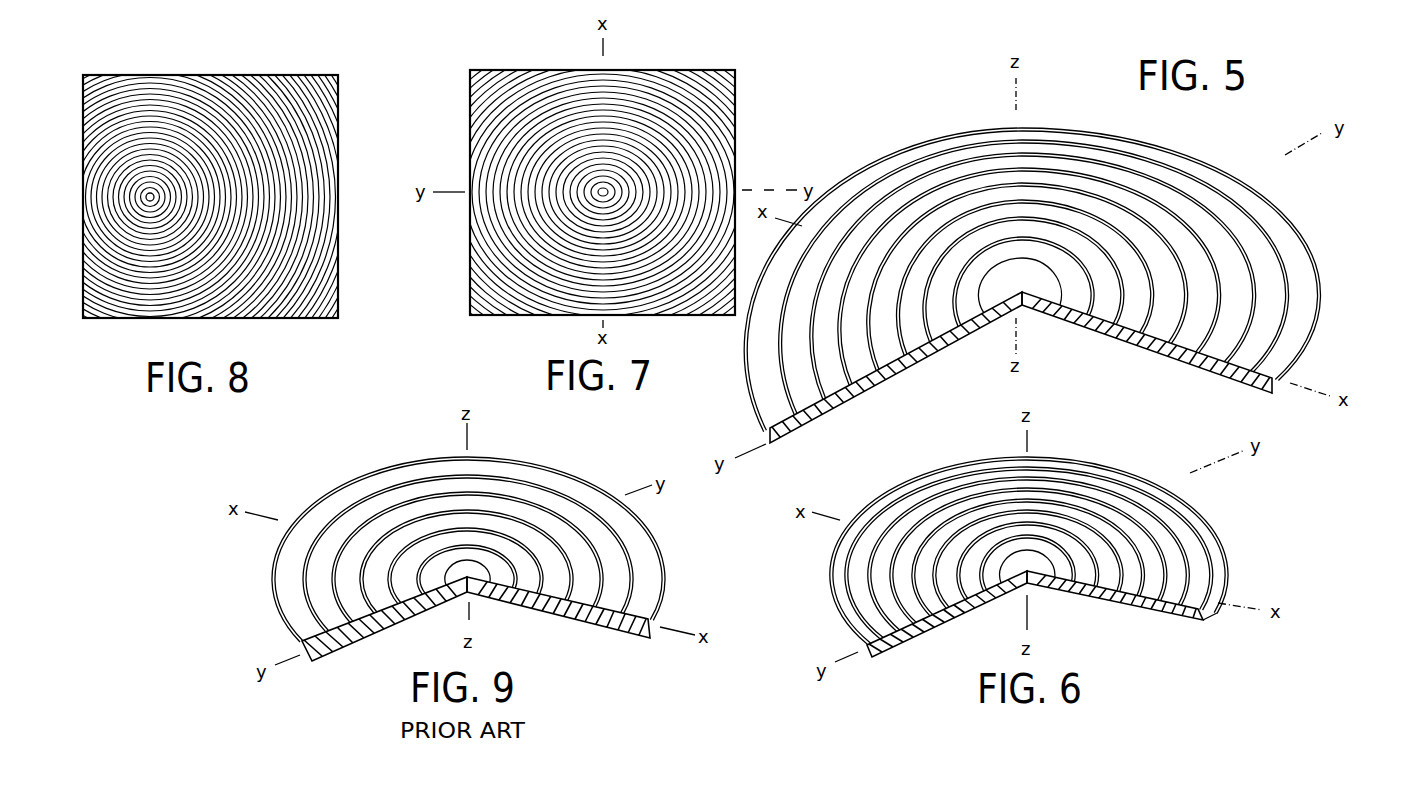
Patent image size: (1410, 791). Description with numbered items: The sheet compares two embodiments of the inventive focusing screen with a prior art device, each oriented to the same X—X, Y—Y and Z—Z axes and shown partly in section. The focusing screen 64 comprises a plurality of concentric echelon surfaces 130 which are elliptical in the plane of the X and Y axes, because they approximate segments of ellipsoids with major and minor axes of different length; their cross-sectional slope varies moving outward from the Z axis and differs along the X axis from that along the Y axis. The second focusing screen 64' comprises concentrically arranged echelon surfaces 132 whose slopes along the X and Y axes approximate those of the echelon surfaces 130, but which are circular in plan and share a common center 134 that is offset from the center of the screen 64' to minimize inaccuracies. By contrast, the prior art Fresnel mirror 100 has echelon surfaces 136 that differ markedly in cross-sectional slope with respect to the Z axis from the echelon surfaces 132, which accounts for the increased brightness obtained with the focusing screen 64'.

In FIG. 7, the focusing screen 64 is at (602, 209).
In FIG. 5, the focusing screen 64 is at (1053, 285).
In FIG. 8, the focusing screen 64' is at (210, 214).
In FIG. 6, the focusing screen 64' is at (1029, 575).
In FIG. 9, the Fresnel mirror 100 is at (676, 560).
In FIG. 7, the echelon surfaces 130 is at (735, 72).
In FIG. 5, the echelon surfaces 130 is at (1173, 170).
In FIG. 8, the echelon surfaces 132 is at (303, 82).
In FIG. 6, the echelon surfaces 132 is at (1187, 525).
In FIG. 8, the common center 134 is at (148, 197).
In FIG. 9, the echelon surfaces 136 is at (570, 490).